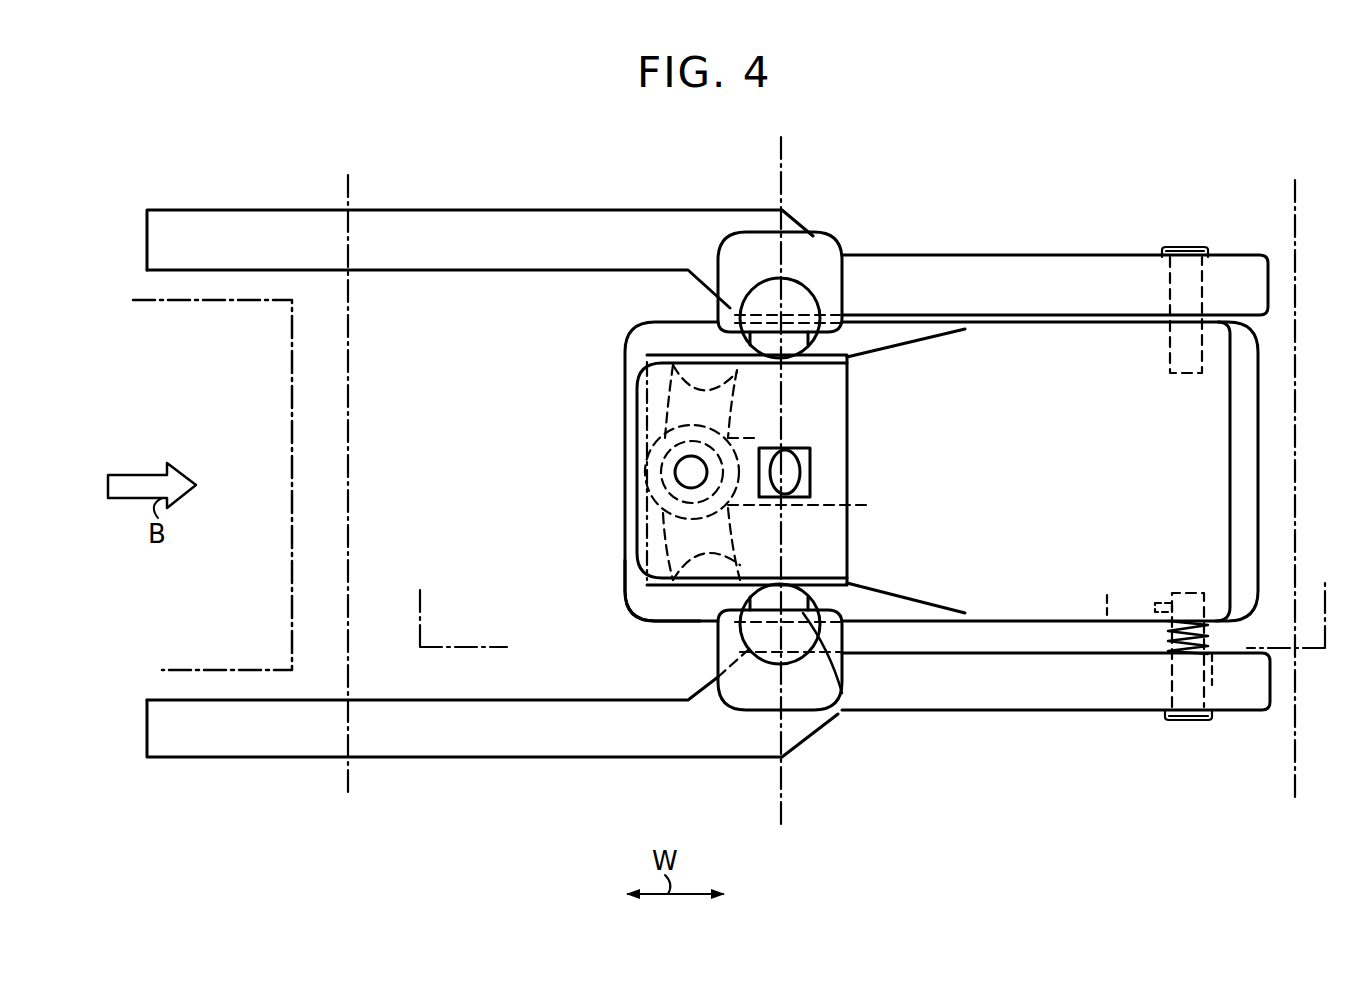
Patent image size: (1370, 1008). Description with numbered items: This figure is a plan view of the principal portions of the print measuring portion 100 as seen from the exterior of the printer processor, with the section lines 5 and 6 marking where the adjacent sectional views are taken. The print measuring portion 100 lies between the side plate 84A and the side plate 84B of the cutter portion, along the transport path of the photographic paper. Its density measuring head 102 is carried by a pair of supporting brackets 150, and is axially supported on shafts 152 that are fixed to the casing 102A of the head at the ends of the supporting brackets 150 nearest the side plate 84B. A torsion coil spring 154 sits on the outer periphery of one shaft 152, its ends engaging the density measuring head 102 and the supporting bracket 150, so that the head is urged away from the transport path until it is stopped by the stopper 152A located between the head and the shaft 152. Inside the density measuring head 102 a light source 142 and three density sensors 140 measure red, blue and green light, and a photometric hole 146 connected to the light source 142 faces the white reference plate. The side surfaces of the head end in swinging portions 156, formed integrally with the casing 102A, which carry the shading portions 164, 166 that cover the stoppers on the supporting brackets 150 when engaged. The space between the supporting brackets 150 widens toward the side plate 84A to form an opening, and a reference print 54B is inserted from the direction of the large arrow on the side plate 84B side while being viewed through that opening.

The print measuring portion 100 is at (508, 790).
The density measuring head 102 is at (600, 562).
The casing 102A is at (648, 619).
The density sensor 140 is at (742, 385).
The light source 142 is at (654, 468).
The photometric hole 146 is at (660, 454).
The supporting bracket 150 is at (603, 210).
The shaft 152 is at (1167, 292).
The stopper 152A is at (1165, 600).
The torsion coil spring 154 is at (1157, 627).
The swinging portion 156 is at (812, 308).
The shading portion 164 is at (800, 713).
The shading portion 166 is at (832, 254).
The side plate 84A is at (350, 197).
The side plate 84B is at (1295, 222).
The reference print 54B is at (210, 670).
The section line 5- 5 is at (1319, 580).
The section line 6- 6 is at (852, 820).